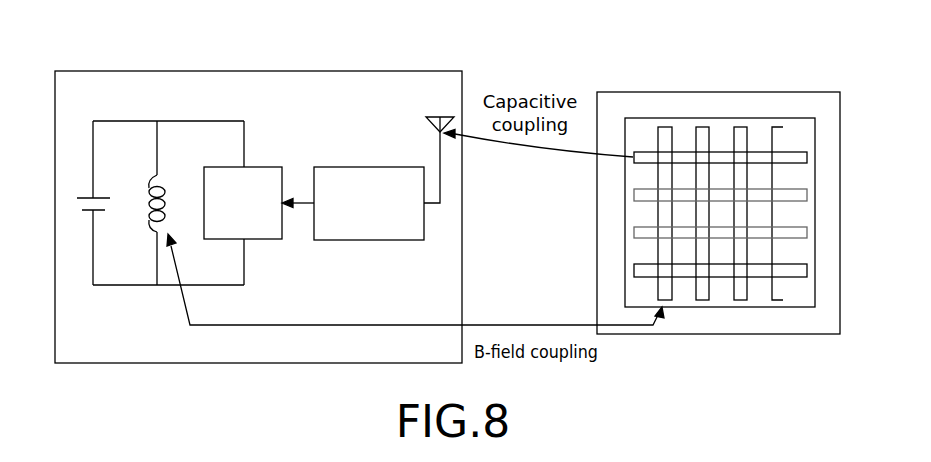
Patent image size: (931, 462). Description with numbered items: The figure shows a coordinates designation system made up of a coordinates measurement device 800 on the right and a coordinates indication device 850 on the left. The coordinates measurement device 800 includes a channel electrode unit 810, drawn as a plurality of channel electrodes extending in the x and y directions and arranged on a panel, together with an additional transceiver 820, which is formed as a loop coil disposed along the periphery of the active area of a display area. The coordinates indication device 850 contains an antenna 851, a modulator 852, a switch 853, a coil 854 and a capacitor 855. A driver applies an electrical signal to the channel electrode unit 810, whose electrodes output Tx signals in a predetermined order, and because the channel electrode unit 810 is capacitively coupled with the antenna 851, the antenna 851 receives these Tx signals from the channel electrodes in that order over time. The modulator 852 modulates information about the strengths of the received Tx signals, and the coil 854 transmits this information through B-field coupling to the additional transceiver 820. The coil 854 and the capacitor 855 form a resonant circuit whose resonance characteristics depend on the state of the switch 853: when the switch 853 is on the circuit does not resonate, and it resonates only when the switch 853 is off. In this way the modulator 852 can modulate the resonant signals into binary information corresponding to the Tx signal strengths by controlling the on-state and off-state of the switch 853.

The coordinates indication device 850 is at (255, 70).
The antenna 851 is at (440, 115).
The modulator 852 is at (366, 165).
The switch 853 is at (266, 166).
The coil 854 is at (160, 176).
The capacitor 855 is at (83, 196).
The coordinates measurement device 800 is at (718, 91).
The channel electrode unit 810 is at (802, 152).
The additional transceiver 820 is at (679, 118).